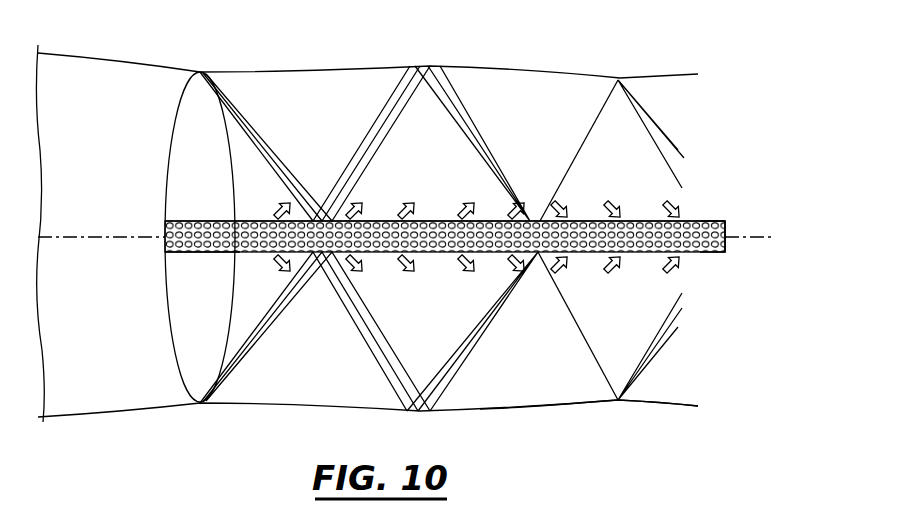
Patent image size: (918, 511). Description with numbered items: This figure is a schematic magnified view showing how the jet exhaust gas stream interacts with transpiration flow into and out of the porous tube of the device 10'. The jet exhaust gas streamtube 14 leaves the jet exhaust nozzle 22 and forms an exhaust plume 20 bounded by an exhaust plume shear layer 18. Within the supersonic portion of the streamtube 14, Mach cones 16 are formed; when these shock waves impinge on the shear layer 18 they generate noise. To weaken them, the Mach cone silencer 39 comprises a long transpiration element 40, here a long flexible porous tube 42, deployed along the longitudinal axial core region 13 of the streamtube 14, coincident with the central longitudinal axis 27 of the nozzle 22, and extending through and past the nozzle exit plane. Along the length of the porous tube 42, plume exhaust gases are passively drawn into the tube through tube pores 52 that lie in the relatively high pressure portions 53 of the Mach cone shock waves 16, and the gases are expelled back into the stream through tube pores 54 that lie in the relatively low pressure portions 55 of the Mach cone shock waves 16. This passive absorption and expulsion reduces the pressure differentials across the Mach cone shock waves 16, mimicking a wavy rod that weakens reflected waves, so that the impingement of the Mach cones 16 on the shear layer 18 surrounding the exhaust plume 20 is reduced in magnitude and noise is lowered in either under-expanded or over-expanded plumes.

The jet exhaust nozzle 22 is at (133, 75).
The jet exhaust gas streamtube 14 is at (235, 385).
The Mach cones 16 is at (257, 340).
The exhaust plume shear layer 18 is at (558, 405).
The exhaust plume 20 is at (677, 387).
The tube pores 52 is at (290, 236).
The relatively high pressure portions 53 is at (270, 203).
The tube pores 54 is at (450, 243).
The relatively low pressure portions 55 is at (475, 173).
The longitudinal axial core region 13 is at (732, 252).
The Mach cone silencer 39 is at (445, 165).
The long transpiration element 40 is at (243, 212).
The long flexible porous tube 42 is at (232, 230).
The device 10' is at (716, 198).
The central longitudinal axis 27 is at (743, 235).